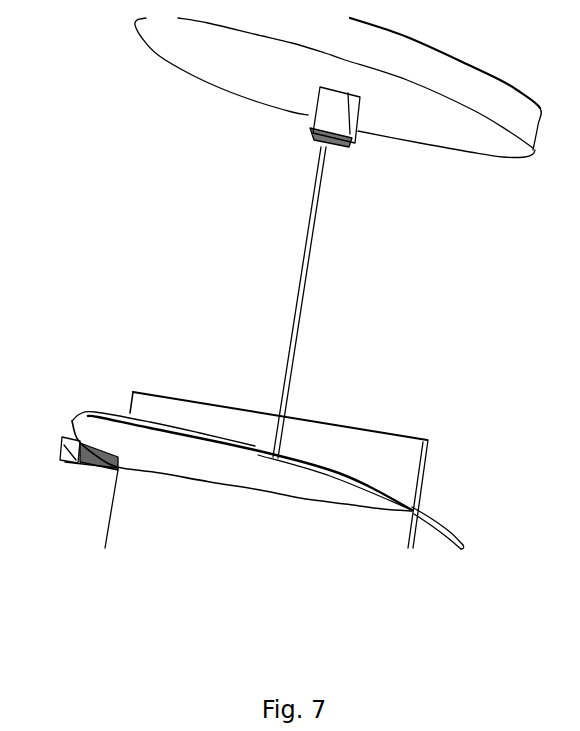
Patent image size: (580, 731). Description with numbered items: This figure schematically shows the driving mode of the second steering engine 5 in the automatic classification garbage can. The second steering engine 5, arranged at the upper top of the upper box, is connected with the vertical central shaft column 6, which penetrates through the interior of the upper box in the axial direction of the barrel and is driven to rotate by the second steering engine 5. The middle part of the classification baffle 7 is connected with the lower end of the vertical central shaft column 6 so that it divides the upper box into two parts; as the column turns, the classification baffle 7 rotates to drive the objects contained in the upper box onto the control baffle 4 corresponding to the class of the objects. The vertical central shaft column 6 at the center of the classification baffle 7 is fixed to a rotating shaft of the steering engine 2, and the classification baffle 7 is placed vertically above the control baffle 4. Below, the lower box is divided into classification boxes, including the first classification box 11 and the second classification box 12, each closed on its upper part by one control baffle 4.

The first steering engine 2 is at (90, 491).
The control baffle 4 is at (142, 436).
The second steering engine 5 is at (344, 122).
The vertical central shaft column 6 is at (283, 299).
The classification baffle 7 is at (361, 454).
The first classification box 11 is at (190, 534).
The second classification box 12 is at (430, 555).